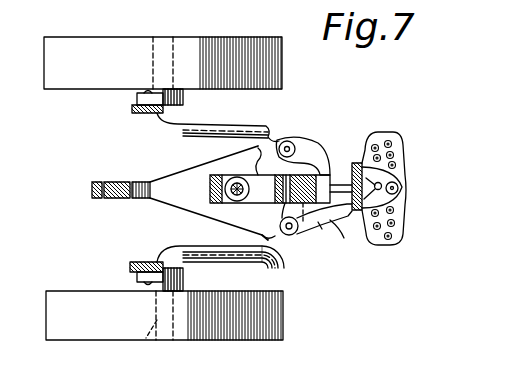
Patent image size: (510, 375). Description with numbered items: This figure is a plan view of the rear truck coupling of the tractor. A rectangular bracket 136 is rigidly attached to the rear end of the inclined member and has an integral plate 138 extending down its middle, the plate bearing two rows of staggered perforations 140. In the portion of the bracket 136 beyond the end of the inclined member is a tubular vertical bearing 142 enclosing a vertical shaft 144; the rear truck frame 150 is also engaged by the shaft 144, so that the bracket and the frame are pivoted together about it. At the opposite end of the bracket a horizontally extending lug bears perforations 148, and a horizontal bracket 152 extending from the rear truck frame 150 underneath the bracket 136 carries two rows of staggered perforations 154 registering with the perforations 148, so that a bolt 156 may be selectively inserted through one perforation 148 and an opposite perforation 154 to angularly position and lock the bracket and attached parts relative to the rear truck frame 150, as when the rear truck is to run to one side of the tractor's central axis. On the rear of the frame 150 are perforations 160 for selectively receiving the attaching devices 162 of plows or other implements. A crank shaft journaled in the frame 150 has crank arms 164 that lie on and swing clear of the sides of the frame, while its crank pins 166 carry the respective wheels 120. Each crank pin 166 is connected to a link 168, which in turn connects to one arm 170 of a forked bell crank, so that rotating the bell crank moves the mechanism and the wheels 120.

The wheel 120 is at (98, 46).
The crank pin 166 is at (180, 46).
The arm of forked bell crank 170 is at (132, 108).
The link 168 is at (145, 114).
The crank arm 164 is at (203, 118).
The perforations 160 is at (101, 182).
The rear truck frame 150 is at (135, 199).
The vertical shaft 144 is at (212, 176).
The plate 138 is at (333, 168).
The tubular vertical bearing 142 is at (285, 136).
The perforations 140 is at (288, 240).
The attaching device 162 is at (281, 269).
The horizontal bracket 152 is at (347, 233).
The perforations 154 is at (380, 132).
The perforations 148 is at (398, 166).
The bolt 156 is at (404, 187).
The rectangular bracket 136 is at (405, 204).